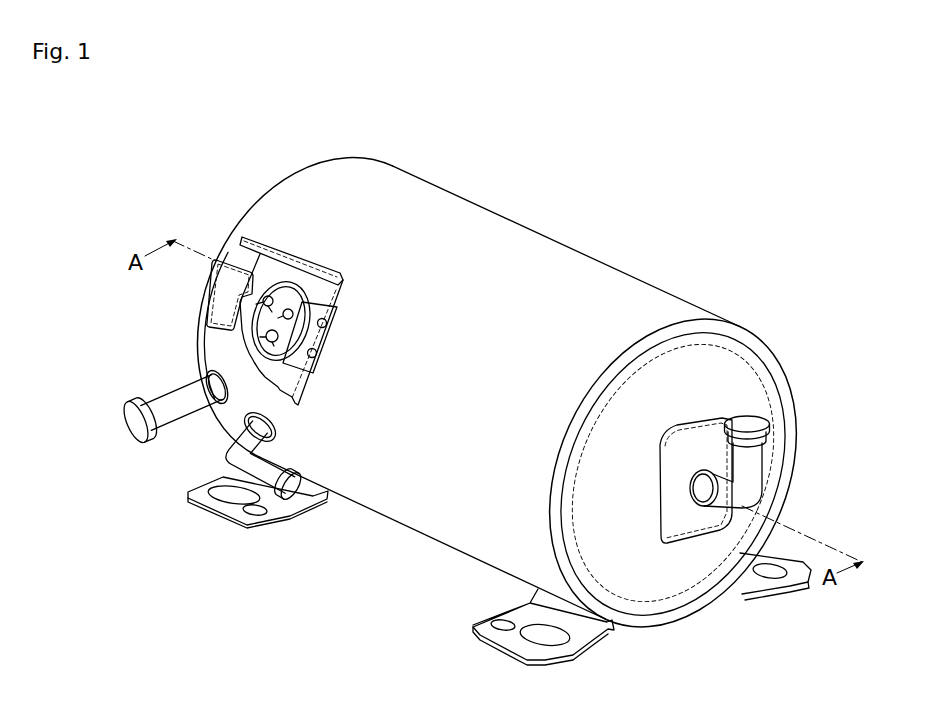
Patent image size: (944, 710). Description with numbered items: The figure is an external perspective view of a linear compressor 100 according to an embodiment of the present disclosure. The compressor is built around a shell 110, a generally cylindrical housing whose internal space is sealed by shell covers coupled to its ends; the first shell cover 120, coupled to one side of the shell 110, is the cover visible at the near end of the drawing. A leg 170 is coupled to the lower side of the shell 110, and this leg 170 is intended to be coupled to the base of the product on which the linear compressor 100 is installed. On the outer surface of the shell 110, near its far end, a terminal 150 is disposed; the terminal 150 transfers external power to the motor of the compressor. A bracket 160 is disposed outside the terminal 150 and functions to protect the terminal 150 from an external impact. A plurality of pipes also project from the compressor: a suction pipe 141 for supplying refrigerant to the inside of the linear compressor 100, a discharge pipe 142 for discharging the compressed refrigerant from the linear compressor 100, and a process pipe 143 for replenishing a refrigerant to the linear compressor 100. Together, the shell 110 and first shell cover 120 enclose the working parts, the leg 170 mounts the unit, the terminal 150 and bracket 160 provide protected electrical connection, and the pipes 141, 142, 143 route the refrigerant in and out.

The linear compressor 100 is at (571, 191).
The shell 110 is at (597, 283).
The first shell cover 120 is at (740, 373).
The suction pipe 141 is at (719, 500).
The discharge pipe 142 is at (232, 455).
The process pipe 143 is at (167, 388).
The terminal 150 is at (263, 290).
The bracket 160 is at (279, 248).
The leg 170 is at (478, 625).